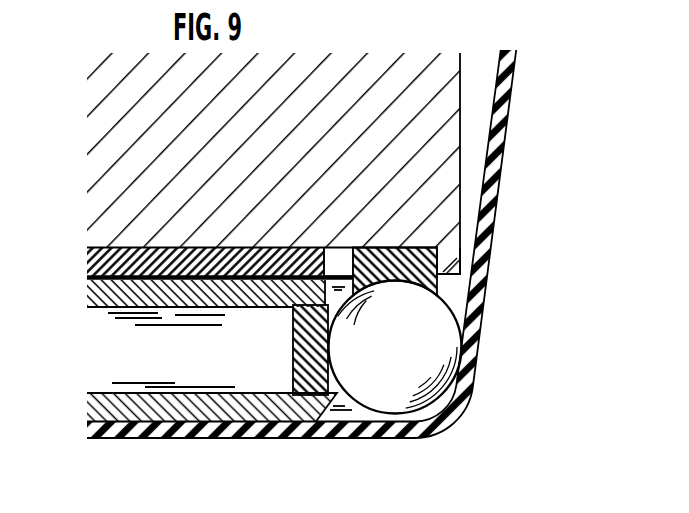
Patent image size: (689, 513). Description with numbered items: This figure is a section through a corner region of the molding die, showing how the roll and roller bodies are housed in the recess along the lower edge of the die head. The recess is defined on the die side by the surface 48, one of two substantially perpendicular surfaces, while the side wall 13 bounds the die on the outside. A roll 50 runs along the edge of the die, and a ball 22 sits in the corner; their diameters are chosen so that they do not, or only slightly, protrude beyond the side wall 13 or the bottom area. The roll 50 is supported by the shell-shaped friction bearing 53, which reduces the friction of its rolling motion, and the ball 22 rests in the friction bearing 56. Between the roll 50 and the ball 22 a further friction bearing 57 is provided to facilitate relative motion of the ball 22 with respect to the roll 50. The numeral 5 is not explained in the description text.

The housing wall 5 is at (503, 98).
The side wall 13 is at (461, 137).
The friction bearing 53 is at (328, 272).
The surface 48 is at (353, 250).
The friction bearing 56 is at (437, 262).
The ball 22 is at (439, 343).
The roll 50 is at (270, 412).
The friction bearing 57 is at (322, 398).